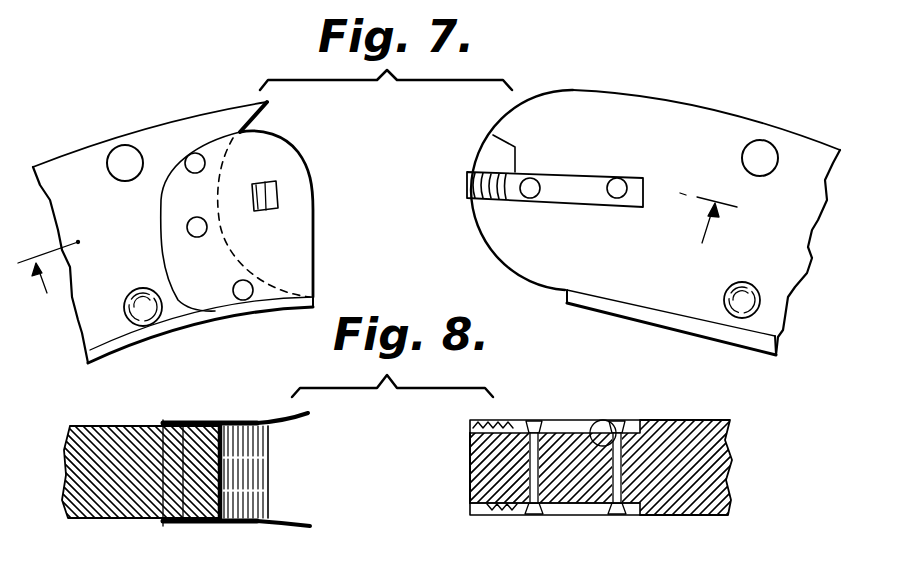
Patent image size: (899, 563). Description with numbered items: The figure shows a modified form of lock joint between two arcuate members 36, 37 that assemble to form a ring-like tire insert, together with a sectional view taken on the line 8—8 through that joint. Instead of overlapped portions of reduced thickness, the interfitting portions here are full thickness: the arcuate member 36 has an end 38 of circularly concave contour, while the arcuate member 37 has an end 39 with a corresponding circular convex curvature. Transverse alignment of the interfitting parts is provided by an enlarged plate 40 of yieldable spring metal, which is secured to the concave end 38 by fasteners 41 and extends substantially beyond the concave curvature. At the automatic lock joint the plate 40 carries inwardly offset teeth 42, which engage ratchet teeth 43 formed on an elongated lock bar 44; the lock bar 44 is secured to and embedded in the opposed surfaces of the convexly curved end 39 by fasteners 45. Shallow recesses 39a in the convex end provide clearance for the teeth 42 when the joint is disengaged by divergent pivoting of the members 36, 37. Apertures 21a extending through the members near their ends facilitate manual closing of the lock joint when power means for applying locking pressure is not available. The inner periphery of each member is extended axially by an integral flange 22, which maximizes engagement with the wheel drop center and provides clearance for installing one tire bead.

In FIG. 7, the section line 8— 8 is at (377, 234).
In FIG. 7, the apertures 21a is at (125, 145).
In FIG. 7, the flange 22 is at (153, 339).
In FIG. 7, the arcuate member 36 is at (67, 158).
In FIG. 8, the arcuate member 36 is at (110, 425).
In FIG. 7, the arcuate member 37 is at (700, 84).
In FIG. 8, the arcuate member 37 is at (698, 420).
In FIG. 7, the concave end 38 is at (250, 127).
In FIG. 8, the concave end 38 is at (222, 467).
In FIG. 7, the convex end 39 is at (487, 250).
In FIG. 8, the convex end 39 is at (472, 450).
In FIG. 7, the shallow recess 39a is at (500, 140).
In FIG. 8, the shallow recess 39a is at (472, 512).
In FIG. 7, the plate 40 is at (300, 258).
In FIG. 8, the plate 40 is at (203, 420).
In FIG. 7, the fasteners 41 is at (188, 172).
In FIG. 8, the fasteners 41 is at (183, 478).
In FIG. 7, the teeth 42 is at (272, 195).
In FIG. 8, the teeth 42 is at (260, 427).
In FIG. 7, the ratchet teeth 43 is at (470, 182).
In FIG. 8, the ratchet teeth 43 is at (480, 423).
In FIG. 7, the lock bar 44 is at (590, 150).
In FIG. 8, the lock bar 44 is at (562, 420).
In FIG. 7, the fasteners 45 is at (603, 198).
In FIG. 8, the fasteners 45 is at (603, 421).